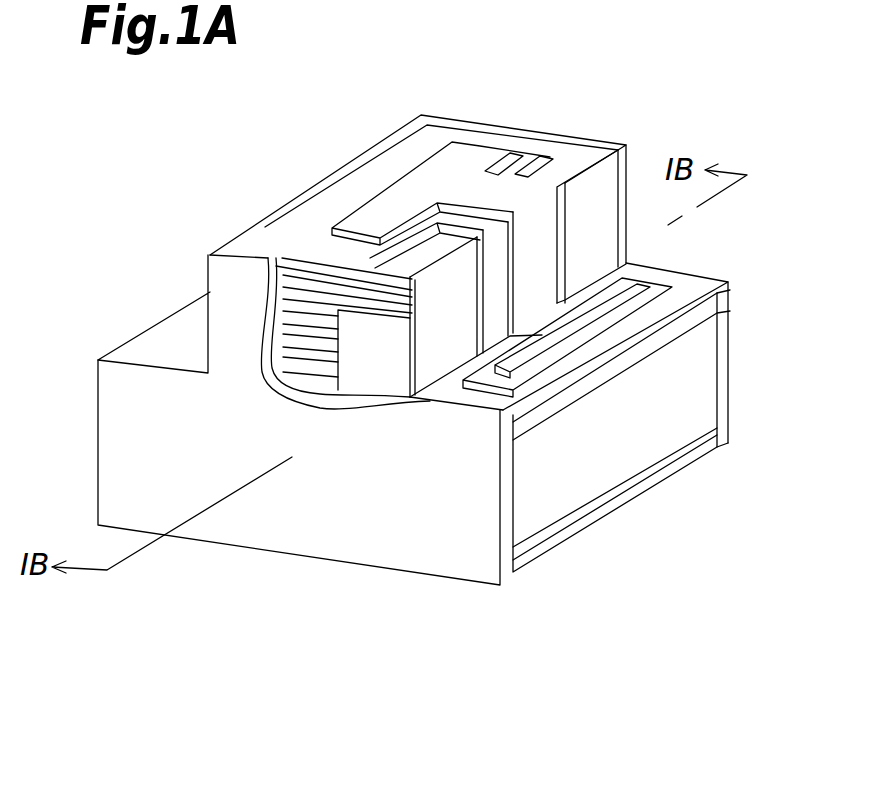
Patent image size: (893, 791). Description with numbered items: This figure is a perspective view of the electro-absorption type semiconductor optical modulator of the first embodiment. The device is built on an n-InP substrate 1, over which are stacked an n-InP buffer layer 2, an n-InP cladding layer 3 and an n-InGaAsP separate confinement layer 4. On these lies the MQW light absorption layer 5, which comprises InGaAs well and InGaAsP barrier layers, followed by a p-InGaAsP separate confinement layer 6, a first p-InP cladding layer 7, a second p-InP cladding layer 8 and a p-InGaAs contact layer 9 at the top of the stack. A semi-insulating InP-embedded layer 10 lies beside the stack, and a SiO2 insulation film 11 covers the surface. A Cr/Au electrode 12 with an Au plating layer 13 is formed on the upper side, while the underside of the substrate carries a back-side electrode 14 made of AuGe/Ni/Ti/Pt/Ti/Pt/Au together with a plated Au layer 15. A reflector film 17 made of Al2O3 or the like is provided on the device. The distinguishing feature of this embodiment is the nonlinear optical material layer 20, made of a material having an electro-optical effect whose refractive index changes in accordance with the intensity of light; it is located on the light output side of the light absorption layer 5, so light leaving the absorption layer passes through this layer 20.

The n-InP substrate 1 is at (728, 353).
The n-InP buffer layer 2 is at (726, 322).
The n-InP cladding layer 3 is at (305, 374).
The n-InGaAsP separate confinement layer 4 is at (300, 352).
The MQW light absorption layer 5 is at (325, 348).
The p-InGaAsP separate confinement layer 6 is at (303, 327).
The first p-InP cladding layer 7 is at (300, 312).
The second p-InP cladding layer 8 is at (292, 290).
The p-InGaAs contact layer 9 is at (292, 262).
The semi-insulating InP-embedded layer 10 is at (378, 374).
The SiO2 insulation film 11 is at (725, 297).
The Cr/Au electrode 12 is at (525, 150).
The Au plating layer 13 is at (473, 158).
The back-side electrode 14 is at (662, 468).
The plated Au layer 15 is at (634, 498).
The reflector film 17 is at (583, 143).
The nonlinear optical material layer 20 is at (382, 548).